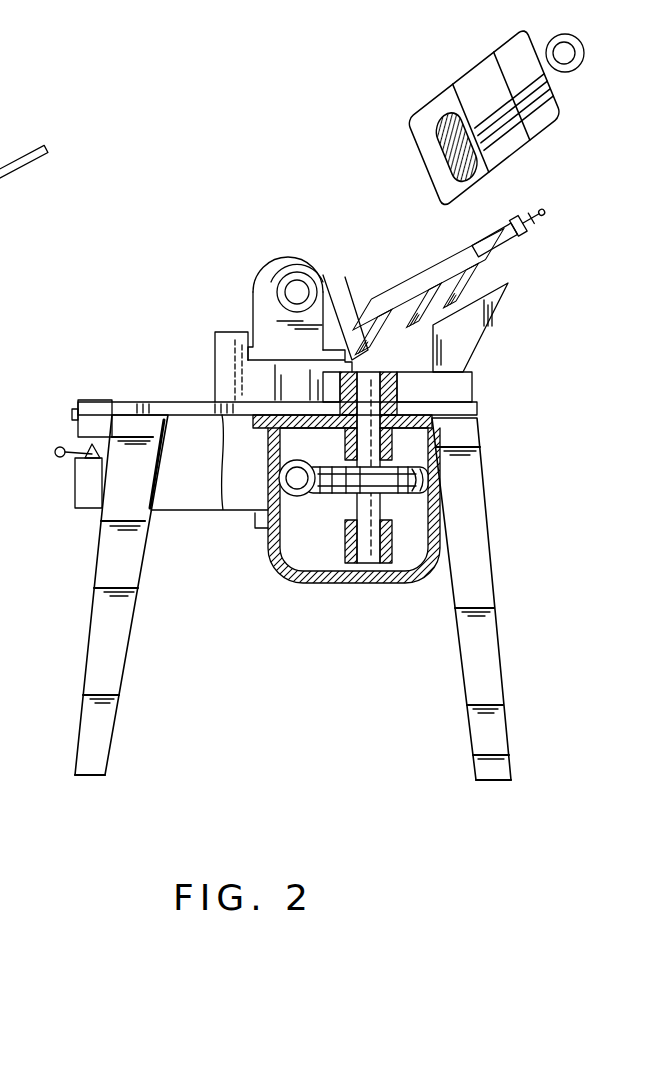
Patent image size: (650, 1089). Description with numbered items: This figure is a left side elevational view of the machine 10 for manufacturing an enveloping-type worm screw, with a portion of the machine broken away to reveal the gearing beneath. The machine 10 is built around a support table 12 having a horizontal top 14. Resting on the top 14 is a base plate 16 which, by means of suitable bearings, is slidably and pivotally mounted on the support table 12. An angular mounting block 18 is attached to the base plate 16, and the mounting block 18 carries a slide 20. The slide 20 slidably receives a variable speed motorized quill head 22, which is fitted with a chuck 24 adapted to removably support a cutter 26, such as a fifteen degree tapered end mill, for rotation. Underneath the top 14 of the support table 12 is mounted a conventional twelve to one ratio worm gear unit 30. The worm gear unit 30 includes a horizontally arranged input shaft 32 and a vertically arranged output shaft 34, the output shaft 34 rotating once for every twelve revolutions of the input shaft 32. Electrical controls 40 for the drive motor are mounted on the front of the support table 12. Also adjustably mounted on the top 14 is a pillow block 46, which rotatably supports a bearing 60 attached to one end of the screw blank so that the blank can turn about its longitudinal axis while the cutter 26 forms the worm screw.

The machine 10 is at (269, 182).
The support table 12 is at (477, 446).
The horizontal top 14 is at (153, 401).
The base plate 16 is at (473, 389).
The angular mounting block 18 is at (483, 322).
The slide 20 is at (518, 245).
The variable speed motorized quill head 22 is at (364, 244).
The chuck 24 is at (330, 258).
The cutter 26 is at (300, 259).
The worm gear unit 30 is at (271, 559).
The input shaft 32 is at (283, 484).
The output shaft 34 is at (380, 506).
The electrical controls 40 is at (84, 490).
The pillow block 46 is at (264, 271).
The bearing 60 is at (278, 295).